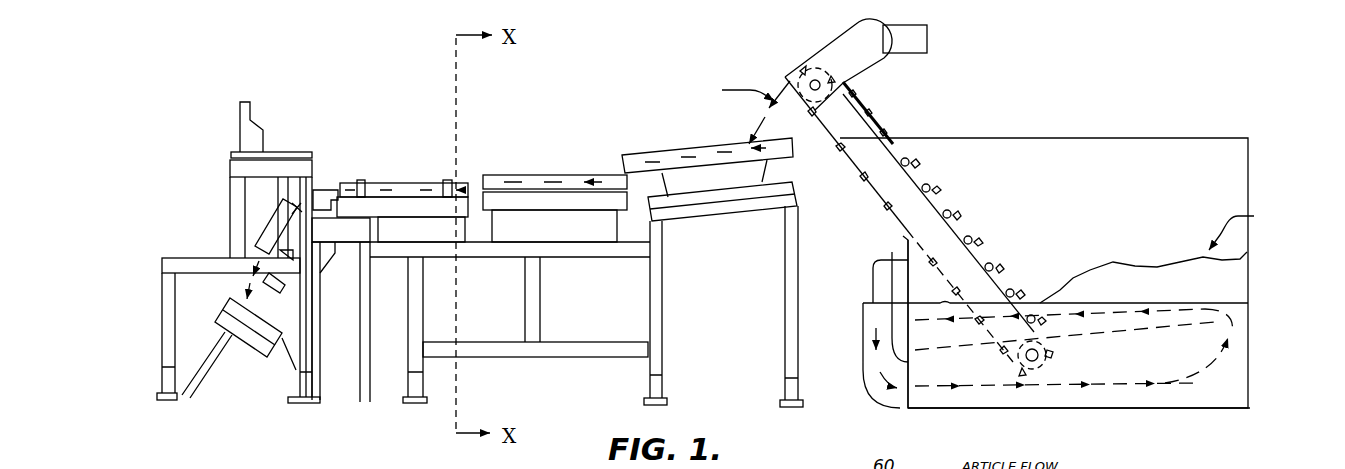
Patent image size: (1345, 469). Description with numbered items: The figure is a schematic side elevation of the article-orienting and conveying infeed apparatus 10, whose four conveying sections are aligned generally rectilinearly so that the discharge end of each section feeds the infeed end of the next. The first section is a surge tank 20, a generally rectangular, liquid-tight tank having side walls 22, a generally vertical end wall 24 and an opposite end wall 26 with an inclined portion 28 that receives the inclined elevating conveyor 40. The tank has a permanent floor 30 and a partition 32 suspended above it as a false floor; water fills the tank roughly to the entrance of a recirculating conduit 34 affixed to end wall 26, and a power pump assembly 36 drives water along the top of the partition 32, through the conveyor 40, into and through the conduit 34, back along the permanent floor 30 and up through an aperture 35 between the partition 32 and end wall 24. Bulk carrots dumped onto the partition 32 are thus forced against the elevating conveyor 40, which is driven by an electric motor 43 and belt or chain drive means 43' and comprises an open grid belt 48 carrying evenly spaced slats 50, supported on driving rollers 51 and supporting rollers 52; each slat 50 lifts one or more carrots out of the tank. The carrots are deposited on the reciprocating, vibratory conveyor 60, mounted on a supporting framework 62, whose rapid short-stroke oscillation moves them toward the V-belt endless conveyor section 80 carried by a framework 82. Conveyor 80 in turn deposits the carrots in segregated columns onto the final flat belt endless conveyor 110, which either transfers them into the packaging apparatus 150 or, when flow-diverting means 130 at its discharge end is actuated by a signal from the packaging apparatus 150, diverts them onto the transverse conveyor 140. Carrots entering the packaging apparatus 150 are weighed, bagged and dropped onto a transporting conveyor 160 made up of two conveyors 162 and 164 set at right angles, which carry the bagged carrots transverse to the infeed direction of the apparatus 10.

The article-orienting and conveying infeed apparatus 10 is at (1114, 99).
The surge tank 20 is at (1167, 137).
The side walls 22 is at (1178, 248).
The vertical end wall 24 is at (1250, 283).
The end wall 26 is at (905, 241).
The inclined portion 28 is at (865, 184).
The permanent floor 30 is at (1248, 410).
The partition 32 is at (1134, 327).
The recirculating conduit 34 is at (858, 360).
The aperture 35 is at (1240, 330).
The power pump assembly 36 is at (870, 277).
The elevating conveyor 40 is at (866, 102).
The variable speed electric motor 43 is at (925, 39).
The belt or chain drive means 43' is at (838, 64).
The endless belt or grid 48 is at (898, 152).
The slats or carrot-supporting members 50 is at (952, 217).
The driving rollers or wheels 51 is at (798, 75).
The supporting rollers or wheels 52 is at (1062, 368).
The vibratory conveyor 60 is at (666, 152).
The supporting framework 62 is at (785, 296).
The V-belt endless conveyor section 80 is at (569, 172).
The framework 82 is at (612, 265).
The flat belt endless conveyor 110 is at (403, 181).
The flow-diverting means 130 is at (317, 200).
The transverse conveyor 140 is at (350, 236).
The packaging apparatus 150 is at (211, 108).
The transporting conveyor 160 is at (240, 348).
The conveyor 162 is at (233, 315).
The conveyor 164 is at (272, 335).